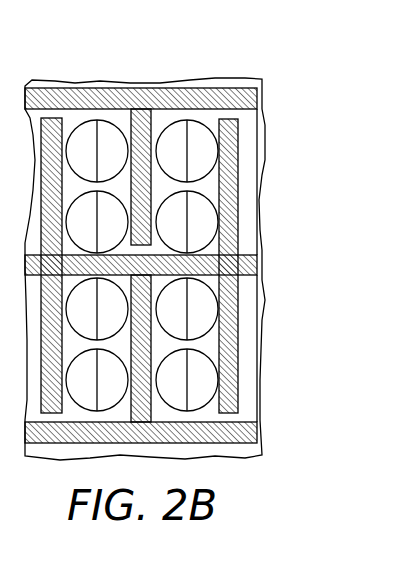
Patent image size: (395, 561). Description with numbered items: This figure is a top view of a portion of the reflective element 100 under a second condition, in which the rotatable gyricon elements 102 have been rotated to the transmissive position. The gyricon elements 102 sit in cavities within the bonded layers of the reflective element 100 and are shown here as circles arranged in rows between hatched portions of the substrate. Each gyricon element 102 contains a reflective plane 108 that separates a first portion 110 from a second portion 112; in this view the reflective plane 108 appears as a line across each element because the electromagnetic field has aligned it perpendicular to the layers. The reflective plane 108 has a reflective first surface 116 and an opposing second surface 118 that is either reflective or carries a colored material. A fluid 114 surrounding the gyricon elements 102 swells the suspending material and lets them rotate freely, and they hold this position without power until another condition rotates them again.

The reflective element 100 is at (283, 74).
The rotatable gyricon elements 102 is at (128, 97).
The reflective plane 108 is at (187, 148).
The first portion 110 is at (207, 220).
The second portion 112 is at (175, 232).
The fluid 114 is at (212, 185).
The first surface 116 is at (185, 298).
The second surface 118 is at (183, 316).